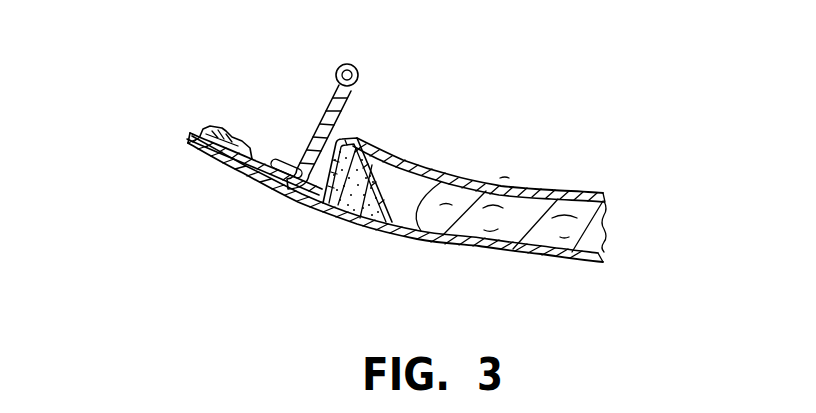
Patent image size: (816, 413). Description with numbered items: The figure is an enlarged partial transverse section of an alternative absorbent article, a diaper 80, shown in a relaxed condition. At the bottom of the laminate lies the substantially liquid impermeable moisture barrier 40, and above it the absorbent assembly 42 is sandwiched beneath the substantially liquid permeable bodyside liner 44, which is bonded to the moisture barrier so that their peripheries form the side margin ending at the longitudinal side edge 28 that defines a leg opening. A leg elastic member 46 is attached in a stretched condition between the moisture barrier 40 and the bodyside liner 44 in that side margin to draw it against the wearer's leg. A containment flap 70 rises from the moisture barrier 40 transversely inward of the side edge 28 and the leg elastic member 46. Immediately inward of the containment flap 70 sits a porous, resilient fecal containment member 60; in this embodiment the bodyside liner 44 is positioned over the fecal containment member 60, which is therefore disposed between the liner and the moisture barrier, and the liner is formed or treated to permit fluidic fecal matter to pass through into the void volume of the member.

The longitudinal side edge 28 is at (197, 127).
The moisture barrier 40 is at (586, 262).
The absorbent assembly 42 is at (608, 224).
The bodyside liner 44 is at (584, 191).
The leg elastic member 46 is at (218, 153).
The fecal containment member 60 is at (378, 148).
The containment flap 70 is at (316, 118).
The diaper 80 is at (505, 155).